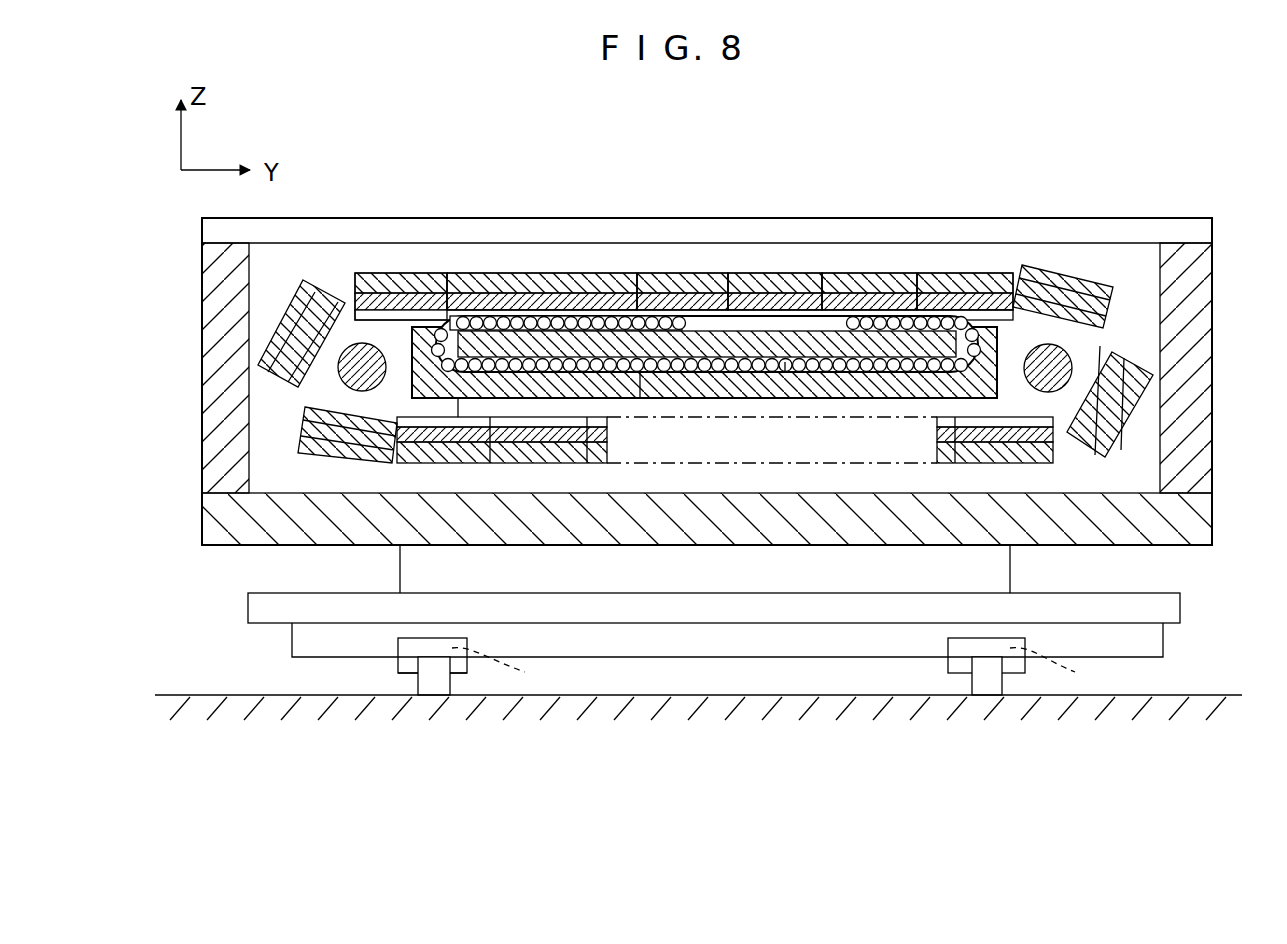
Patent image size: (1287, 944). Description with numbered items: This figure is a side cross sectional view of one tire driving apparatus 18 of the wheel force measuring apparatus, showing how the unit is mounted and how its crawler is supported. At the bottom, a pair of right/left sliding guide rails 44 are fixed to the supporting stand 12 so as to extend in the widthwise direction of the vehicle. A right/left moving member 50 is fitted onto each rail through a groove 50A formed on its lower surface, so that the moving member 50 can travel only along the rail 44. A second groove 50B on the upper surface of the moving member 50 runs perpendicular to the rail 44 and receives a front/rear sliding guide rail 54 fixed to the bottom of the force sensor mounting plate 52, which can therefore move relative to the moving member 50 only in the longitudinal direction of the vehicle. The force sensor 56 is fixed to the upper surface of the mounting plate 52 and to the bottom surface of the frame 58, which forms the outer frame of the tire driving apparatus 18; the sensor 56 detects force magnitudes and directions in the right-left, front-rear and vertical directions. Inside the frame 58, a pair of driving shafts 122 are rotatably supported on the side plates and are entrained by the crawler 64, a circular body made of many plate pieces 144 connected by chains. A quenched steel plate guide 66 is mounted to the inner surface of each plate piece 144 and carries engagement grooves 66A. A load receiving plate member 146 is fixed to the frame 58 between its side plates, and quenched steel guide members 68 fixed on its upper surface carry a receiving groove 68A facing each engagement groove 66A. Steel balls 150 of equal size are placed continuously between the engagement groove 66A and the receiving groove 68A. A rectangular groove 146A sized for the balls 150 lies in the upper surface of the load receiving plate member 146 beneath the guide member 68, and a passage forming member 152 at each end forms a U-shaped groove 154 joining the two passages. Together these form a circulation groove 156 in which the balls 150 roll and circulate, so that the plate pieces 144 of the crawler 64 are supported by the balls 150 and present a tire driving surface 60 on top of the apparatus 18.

The supporting stand 12 is at (712, 753).
The tire driving apparatus 18 is at (1158, 176).
The right/left sliding guide rail 44 is at (416, 682).
The right/left moving member 50 is at (720, 696).
The groove 50A is at (418, 667).
The groove 50B is at (787, 665).
The force sensor mounting plate 52 is at (1172, 610).
The front/rear sliding guide rail 54 is at (1163, 652).
The force sensor 56 is at (1000, 573).
The frame 58 is at (1212, 418).
The tire driving surface 60 is at (650, 272).
The crawler 64 is at (958, 272).
The plate guide 66 is at (1060, 286).
The engagement groove 66A is at (800, 276).
The guide member 68 is at (947, 345).
The receiving groove 68A is at (562, 274).
The driving shaft 122 is at (338, 368).
The plate piece 144 is at (746, 276).
The load receiving plate member 146 is at (778, 380).
The rectangular groove 146A is at (640, 372).
The balls 150 is at (788, 380).
The passage forming member 152 is at (333, 462).
The U-shaped groove 154 is at (403, 300).
The circulation groove 156 is at (785, 374).